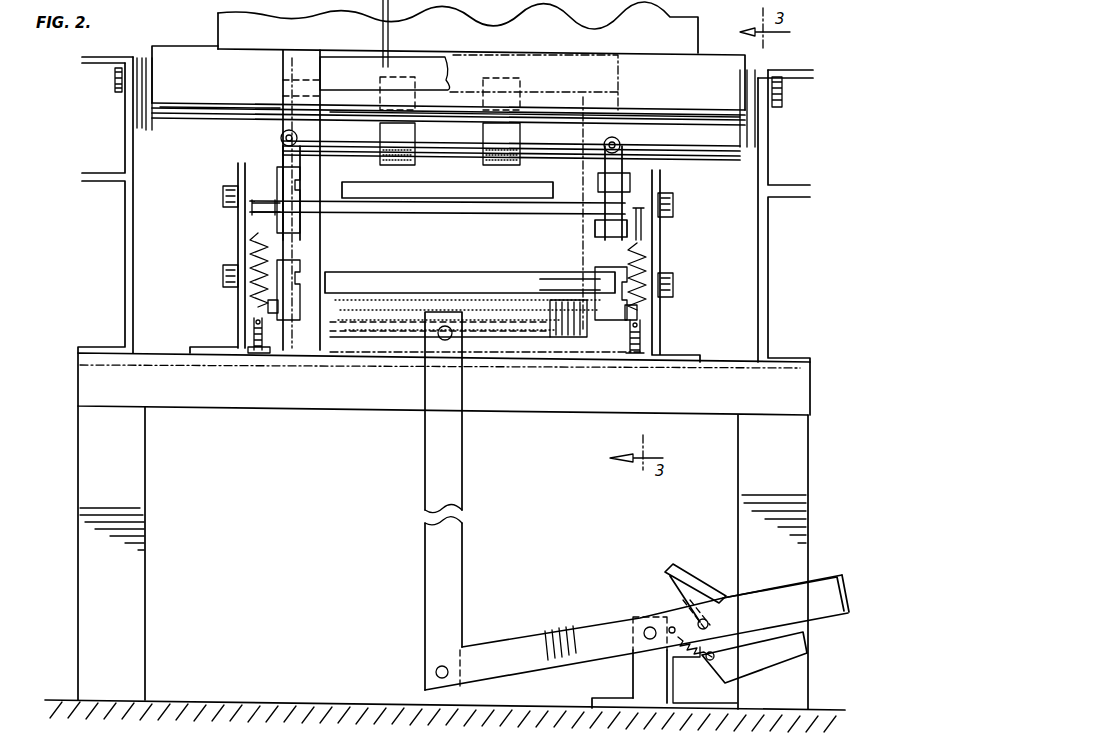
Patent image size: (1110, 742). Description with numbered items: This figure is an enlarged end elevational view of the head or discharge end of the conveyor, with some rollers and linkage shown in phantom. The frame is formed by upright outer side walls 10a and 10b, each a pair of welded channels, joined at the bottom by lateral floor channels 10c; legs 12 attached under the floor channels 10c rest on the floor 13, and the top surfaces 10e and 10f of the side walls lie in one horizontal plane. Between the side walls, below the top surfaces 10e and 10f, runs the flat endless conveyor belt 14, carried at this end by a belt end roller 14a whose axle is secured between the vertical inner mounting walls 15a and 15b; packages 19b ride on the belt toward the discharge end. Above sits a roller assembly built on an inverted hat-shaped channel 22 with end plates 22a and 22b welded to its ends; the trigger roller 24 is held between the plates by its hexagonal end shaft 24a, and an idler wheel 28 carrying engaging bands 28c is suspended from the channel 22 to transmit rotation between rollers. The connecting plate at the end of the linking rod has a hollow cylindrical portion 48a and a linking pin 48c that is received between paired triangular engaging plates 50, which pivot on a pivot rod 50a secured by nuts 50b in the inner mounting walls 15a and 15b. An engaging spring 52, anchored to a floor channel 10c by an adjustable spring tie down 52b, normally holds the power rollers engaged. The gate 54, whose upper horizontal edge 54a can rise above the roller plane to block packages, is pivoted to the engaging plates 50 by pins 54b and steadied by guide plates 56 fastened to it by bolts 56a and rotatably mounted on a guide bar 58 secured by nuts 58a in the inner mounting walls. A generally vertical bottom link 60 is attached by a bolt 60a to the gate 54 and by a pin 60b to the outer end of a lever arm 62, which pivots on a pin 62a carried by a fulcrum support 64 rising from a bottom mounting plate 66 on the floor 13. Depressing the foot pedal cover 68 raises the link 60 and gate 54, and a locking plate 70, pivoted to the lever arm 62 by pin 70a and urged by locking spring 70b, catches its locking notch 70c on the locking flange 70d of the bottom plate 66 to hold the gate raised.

The outer side wall 10a is at (125, 254).
The outer side wall 10b is at (768, 296).
The floor channel 10c is at (290, 396).
The top surface 10e is at (88, 52).
The top surface 10f is at (805, 66).
The upright leg 12 is at (144, 588).
The floor 13 is at (236, 700).
The conveyor belt 14 is at (406, 180).
The belt end roller 14a is at (562, 320).
The inner mounting wall 15a is at (238, 220).
The inner mounting wall 15b is at (662, 238).
The package 19b is at (458, 27).
The inverted hat-shaped channel 22 is at (150, 128).
The end plate 22a is at (136, 112).
The end plate 22b is at (766, 133).
The trigger roller 24 is at (198, 62).
The hexagonal end shaft 24a is at (114, 80).
The idler wheel 28 is at (511, 192).
The engaging band 28c is at (392, 158).
The hollow cylindrical portion 48a is at (281, 138).
The linking pin 48c is at (277, 168).
The engaging plate 50 is at (280, 190).
The pivot rod 50a is at (460, 212).
The nut 50b is at (236, 190).
The engaging spring 52 is at (250, 250).
The spring tie down 52b is at (254, 330).
The gate 54 is at (272, 78).
The upper straight horizontal edge 54a is at (386, 65).
The pin 54b is at (250, 208).
The guide plate 56 is at (302, 262).
The bolt 56a is at (268, 308).
The guide bar 58 is at (420, 270).
The nut 58a is at (230, 286).
The bottom link 60 is at (462, 494).
The bolt 60a is at (448, 341).
The pin 60b is at (436, 672).
The lever arm 62 is at (562, 636).
The pin 62a is at (650, 626).
The fulcrum support 64 is at (632, 684).
The bottom mounting plate 66 is at (620, 708).
The foot pedal cover 68 is at (774, 588).
The locking plate 70 is at (680, 578).
The pin 70a is at (712, 622).
The locking spring 70b is at (672, 640).
The locking notch 70c is at (726, 660).
The locking flange 70d is at (690, 668).